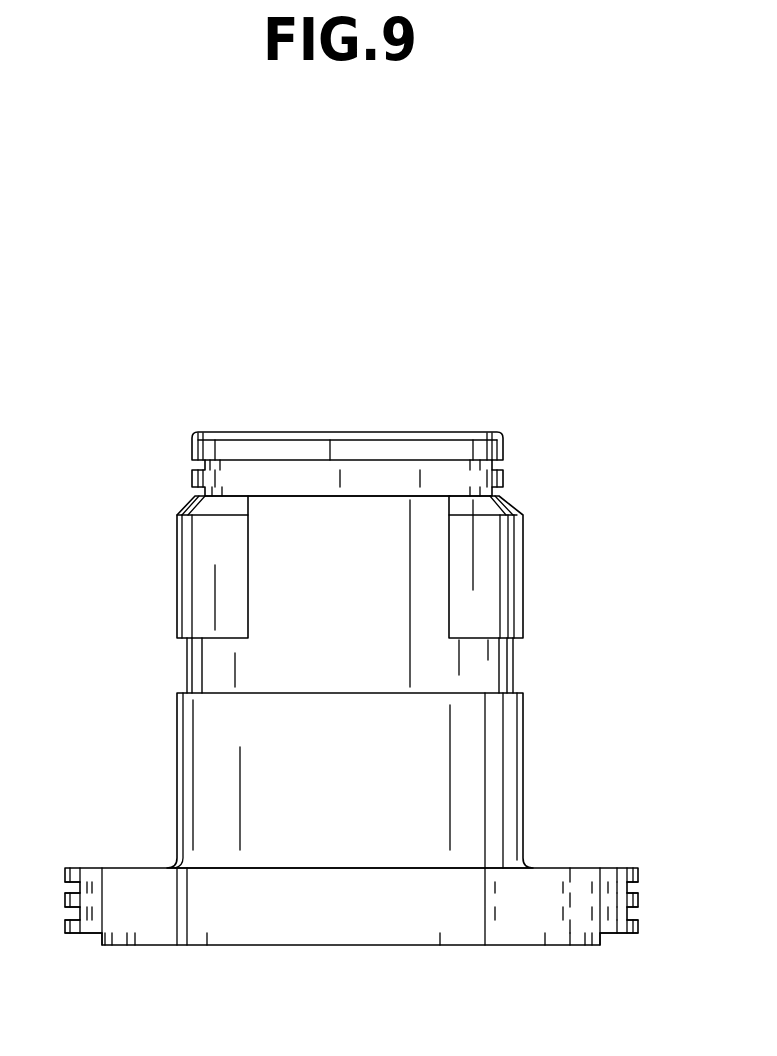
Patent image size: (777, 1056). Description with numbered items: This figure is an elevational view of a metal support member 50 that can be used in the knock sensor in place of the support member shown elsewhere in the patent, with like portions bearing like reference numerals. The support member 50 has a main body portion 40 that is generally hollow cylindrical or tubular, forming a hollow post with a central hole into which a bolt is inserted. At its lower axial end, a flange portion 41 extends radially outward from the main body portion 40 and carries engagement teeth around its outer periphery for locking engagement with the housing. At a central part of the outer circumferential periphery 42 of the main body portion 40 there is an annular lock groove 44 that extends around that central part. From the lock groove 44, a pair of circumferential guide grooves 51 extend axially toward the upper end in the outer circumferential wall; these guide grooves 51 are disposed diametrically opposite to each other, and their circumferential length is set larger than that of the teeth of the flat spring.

The support member 50 is at (447, 378).
The main body portion 40 is at (505, 444).
The circumferential guide grooves 51 is at (324, 507).
The outer circumferential periphery 42 is at (483, 568).
The annular lock groove 44 is at (490, 668).
The flange portion 41 is at (612, 868).